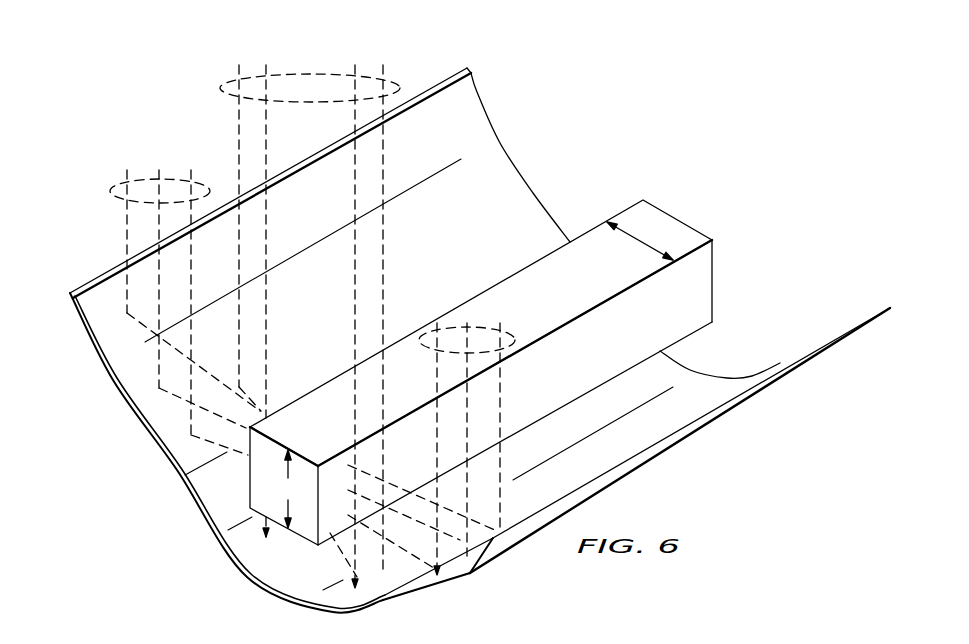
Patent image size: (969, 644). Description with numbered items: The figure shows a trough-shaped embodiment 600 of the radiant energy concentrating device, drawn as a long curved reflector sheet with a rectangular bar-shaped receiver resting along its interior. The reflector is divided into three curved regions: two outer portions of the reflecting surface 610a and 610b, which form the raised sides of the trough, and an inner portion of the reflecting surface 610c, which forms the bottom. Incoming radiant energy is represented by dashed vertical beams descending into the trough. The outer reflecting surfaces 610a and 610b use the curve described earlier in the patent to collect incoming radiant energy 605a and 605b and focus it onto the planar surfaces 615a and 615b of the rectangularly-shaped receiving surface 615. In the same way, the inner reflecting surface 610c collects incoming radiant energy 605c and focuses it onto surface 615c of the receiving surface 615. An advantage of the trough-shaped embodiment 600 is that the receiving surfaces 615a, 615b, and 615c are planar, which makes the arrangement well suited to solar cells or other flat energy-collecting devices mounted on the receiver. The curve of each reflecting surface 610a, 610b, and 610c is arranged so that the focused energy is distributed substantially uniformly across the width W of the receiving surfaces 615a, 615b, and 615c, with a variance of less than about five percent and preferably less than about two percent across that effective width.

The trough-shaped embodiment 600 is at (606, 100).
The incoming radiant energy 605a is at (510, 334).
The incoming radiant energy 605b is at (110, 192).
The incoming radiant energy 605c is at (222, 90).
The outer portion of the reflecting surface 610a is at (677, 442).
The outer portion of the reflecting surface 610b is at (115, 395).
The inner portion of the reflecting surface 610c is at (222, 548).
The rectangularly-shaped receiving surface 615 is at (460, 351).
The receiving surface 615a is at (703, 289).
The receiving surface 615b is at (250, 481).
The receiving surface 615c is at (688, 332).